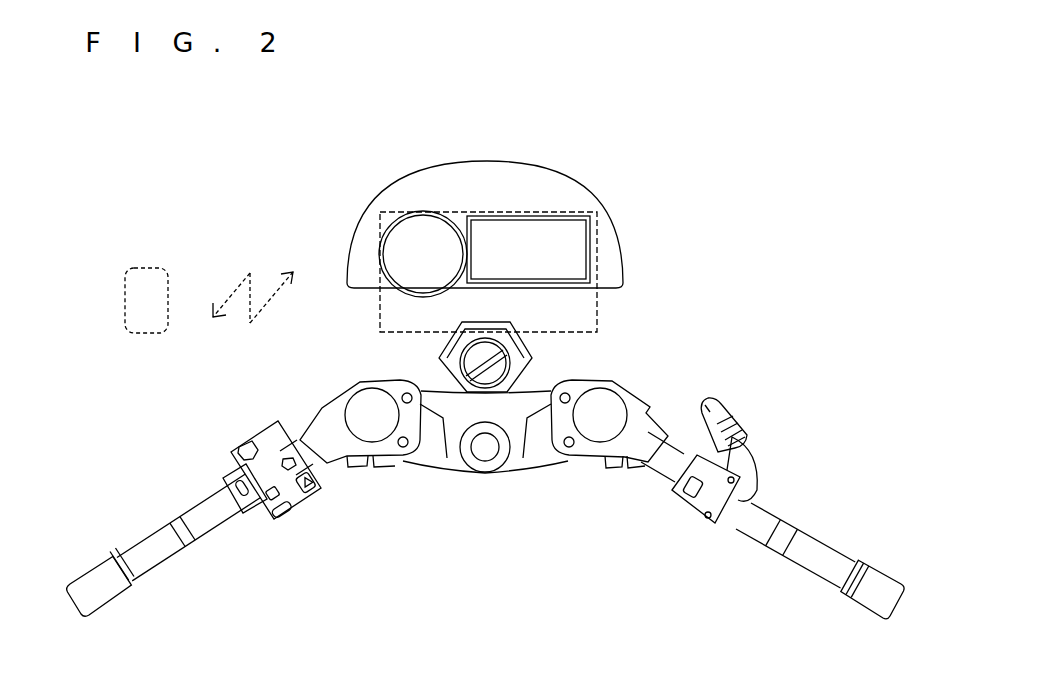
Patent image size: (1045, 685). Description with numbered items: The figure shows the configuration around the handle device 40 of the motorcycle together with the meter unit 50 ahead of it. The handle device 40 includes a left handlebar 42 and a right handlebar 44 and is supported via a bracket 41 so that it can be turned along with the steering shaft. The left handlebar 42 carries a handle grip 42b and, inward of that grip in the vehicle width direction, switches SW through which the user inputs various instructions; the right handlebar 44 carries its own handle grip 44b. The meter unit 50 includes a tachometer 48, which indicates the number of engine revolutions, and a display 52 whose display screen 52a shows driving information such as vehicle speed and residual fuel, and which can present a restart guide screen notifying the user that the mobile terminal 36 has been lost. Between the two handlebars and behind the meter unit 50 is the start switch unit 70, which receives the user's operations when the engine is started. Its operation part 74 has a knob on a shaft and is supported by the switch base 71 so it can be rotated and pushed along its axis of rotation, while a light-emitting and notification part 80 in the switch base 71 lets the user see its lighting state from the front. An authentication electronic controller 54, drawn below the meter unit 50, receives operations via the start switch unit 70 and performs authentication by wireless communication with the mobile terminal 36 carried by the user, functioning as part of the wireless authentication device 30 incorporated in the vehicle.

The wireless authentication device 30 is at (608, 342).
The mobile terminal 36 is at (146, 267).
The handle device 40 is at (774, 447).
The bracket 41 is at (516, 458).
The left handlebar 42 is at (225, 530).
The handle grip 42b is at (150, 545).
The right handlebar 44 is at (770, 541).
The handle grip 44b is at (822, 540).
The tachometer 48 is at (434, 218).
The meter unit 50 is at (566, 220).
The display 52 is at (509, 232).
The display screen 52a is at (570, 256).
The authentication electronic controller (ECU) 54 is at (379, 320).
The start switch unit 70 is at (513, 363).
The switch base 71 is at (512, 335).
The operation part 74 is at (457, 363).
The light-emitting and notification part 80 is at (458, 344).
The switches SW is at (248, 450).